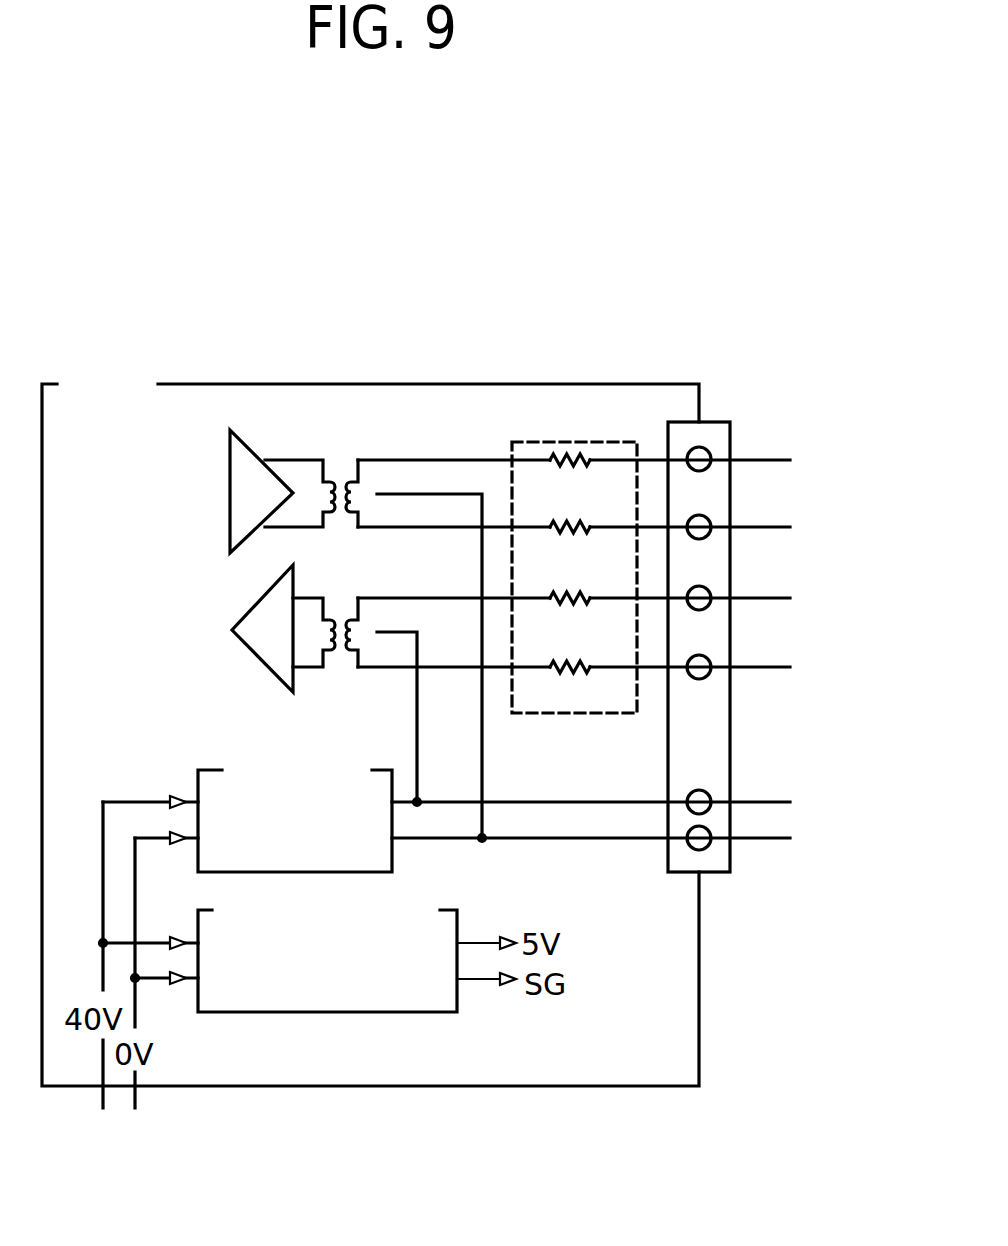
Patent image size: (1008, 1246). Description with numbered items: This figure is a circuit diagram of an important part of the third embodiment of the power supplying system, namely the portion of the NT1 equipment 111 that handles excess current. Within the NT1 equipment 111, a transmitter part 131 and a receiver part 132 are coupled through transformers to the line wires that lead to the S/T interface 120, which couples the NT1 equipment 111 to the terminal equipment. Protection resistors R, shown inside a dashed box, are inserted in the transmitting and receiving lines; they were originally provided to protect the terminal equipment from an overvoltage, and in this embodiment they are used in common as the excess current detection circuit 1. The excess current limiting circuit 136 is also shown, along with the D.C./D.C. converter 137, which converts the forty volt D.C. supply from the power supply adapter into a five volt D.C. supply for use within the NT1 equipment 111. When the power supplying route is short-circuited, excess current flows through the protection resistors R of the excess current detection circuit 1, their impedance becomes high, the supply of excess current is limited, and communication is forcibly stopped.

The excess current detection circuit 1 is at (548, 713).
The NT1 equipment 111 is at (699, 993).
The S/T interface 120 is at (818, 452).
The transmitter part 131 is at (251, 452).
The receiver part 132 is at (243, 647).
The excess current limiting circuit 136 is at (303, 784).
The D.C./D.C. converter 137 is at (457, 1012).